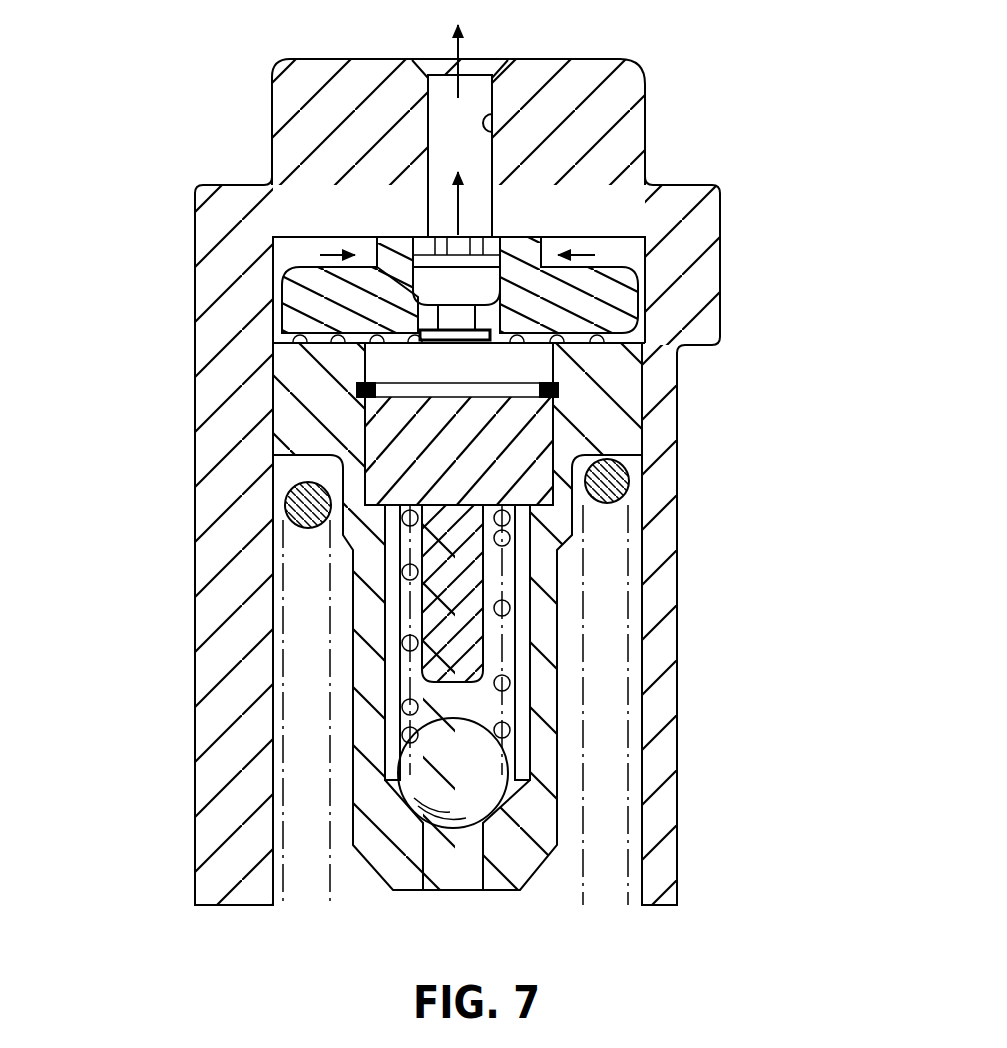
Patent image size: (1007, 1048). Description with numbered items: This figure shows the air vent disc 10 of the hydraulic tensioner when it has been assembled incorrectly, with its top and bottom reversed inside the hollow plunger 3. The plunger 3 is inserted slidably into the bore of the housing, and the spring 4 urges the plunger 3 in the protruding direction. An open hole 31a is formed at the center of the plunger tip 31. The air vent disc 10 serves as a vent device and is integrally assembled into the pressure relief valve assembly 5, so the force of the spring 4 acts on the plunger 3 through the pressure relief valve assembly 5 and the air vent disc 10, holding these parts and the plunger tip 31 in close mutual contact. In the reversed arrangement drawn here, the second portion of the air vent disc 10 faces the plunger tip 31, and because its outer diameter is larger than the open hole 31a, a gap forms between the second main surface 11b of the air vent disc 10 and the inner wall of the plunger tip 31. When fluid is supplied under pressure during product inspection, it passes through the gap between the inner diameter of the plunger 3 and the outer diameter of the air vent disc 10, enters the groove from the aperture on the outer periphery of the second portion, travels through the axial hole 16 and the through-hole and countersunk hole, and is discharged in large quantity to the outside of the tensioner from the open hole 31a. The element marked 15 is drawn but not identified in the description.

The plunger 3 is at (712, 630).
The plunger tip 31 is at (467, 131).
The open hole 31a is at (493, 124).
The second main surface 11b is at (648, 236).
The air vent disc 10 is at (432, 295).
The axial hole 16 is at (500, 290).
The valve seat plate 15 is at (492, 328).
The pressure relief valve assembly 5 is at (262, 405).
The spring 4 is at (285, 515).